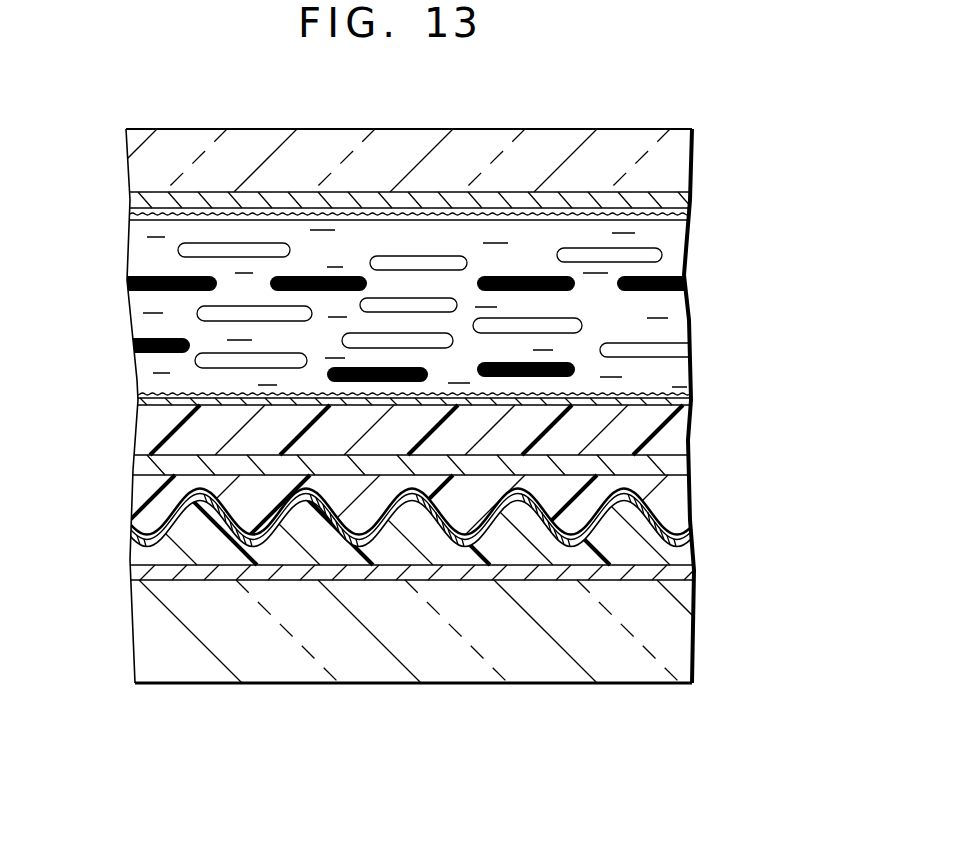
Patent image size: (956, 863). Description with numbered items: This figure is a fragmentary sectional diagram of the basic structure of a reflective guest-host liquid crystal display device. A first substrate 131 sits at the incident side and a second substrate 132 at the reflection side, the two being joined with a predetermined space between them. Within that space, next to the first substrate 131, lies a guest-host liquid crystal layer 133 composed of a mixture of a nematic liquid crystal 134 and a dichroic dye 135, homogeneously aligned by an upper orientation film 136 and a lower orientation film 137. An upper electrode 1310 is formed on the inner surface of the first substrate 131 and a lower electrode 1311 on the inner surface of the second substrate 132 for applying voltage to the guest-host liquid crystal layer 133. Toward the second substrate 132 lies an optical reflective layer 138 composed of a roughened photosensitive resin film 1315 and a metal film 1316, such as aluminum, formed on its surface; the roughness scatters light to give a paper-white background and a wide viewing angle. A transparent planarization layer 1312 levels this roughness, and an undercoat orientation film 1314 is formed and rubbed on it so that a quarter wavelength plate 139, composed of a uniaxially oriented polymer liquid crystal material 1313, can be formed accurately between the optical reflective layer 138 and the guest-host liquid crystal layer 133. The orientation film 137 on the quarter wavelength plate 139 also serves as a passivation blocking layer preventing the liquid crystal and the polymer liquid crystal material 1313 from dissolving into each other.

The first substrate 131 is at (676, 163).
The upper electrode 1310 is at (676, 200).
The upper orientation film 136 is at (134, 224).
The guest-host liquid crystal layer 133 is at (426, 308).
The nematic liquid crystal 134 is at (178, 250).
The dichroic dye 135 is at (130, 284).
The lower orientation film 137 is at (165, 394).
The quarter wavelength plate 139 is at (421, 439).
The polymer liquid crystal material 1313 is at (155, 432).
The undercoat orientation film 1314 is at (140, 464).
The optical reflective layer 138 is at (421, 549).
The planarization layer 1312 is at (150, 500).
The metal film 1316 is at (145, 537).
The resin film 1315 is at (190, 542).
The lower electrode 1311 is at (678, 573).
The second substrate 132 is at (678, 633).